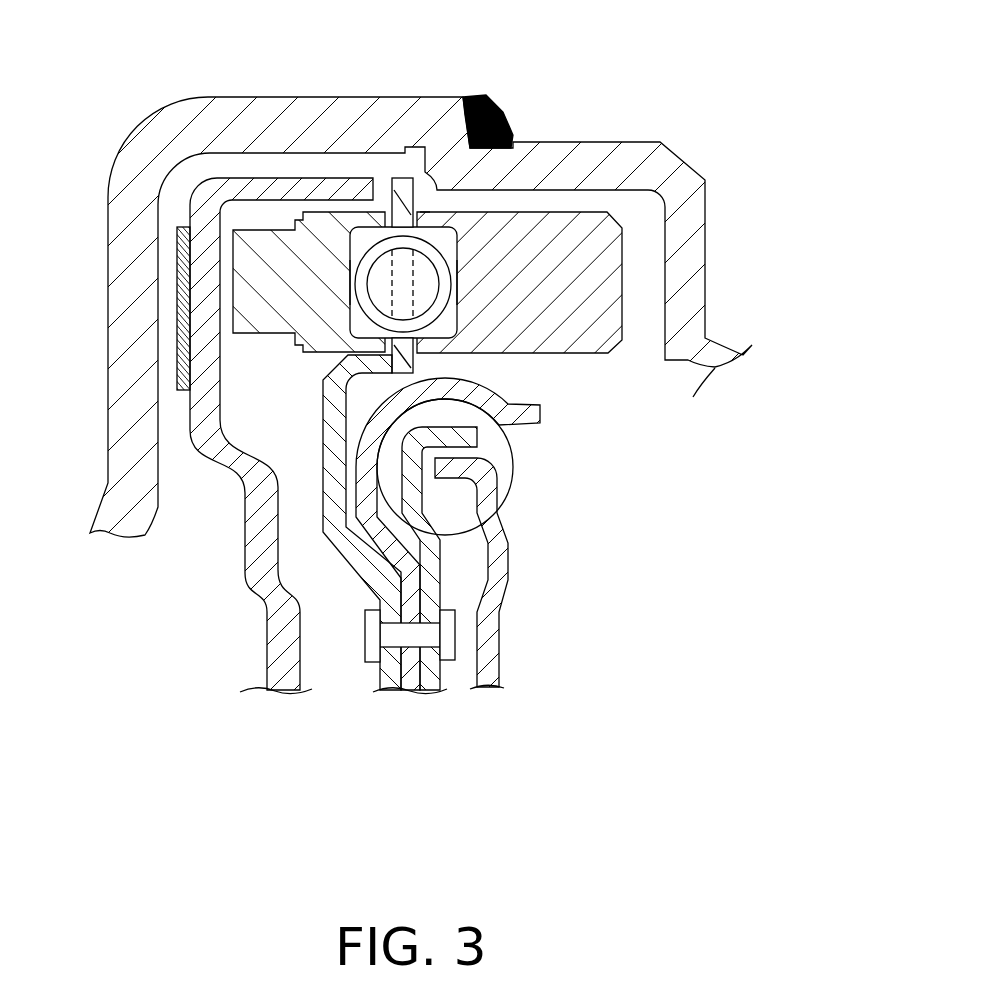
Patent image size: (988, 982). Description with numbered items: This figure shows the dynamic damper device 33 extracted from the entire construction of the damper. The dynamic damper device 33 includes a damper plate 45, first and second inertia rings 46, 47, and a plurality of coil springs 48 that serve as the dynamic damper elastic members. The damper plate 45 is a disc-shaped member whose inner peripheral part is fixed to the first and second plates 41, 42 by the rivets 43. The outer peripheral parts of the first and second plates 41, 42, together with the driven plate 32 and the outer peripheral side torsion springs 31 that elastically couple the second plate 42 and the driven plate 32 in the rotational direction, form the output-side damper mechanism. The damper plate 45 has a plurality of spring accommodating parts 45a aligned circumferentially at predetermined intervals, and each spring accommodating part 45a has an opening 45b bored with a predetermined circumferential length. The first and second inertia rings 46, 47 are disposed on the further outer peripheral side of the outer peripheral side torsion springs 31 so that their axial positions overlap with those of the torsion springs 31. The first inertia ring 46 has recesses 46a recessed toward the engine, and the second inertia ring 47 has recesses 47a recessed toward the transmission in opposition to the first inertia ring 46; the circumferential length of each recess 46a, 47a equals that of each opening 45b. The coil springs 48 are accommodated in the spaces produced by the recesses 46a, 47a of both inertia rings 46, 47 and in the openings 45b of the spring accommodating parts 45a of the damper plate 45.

The outer peripheral side torsion spring 31 is at (513, 462).
The driven plate 32 is at (492, 656).
The dynamic damper device 33 is at (643, 253).
The first plate 41 is at (410, 690).
The second plate 42 is at (440, 675).
The rivet 43 is at (365, 650).
The damper plate 45 is at (337, 532).
The spring accommodating part 45a is at (428, 213).
The opening 45b is at (400, 190).
The first inertia ring 46 is at (268, 240).
The recess 46a is at (363, 268).
The second inertia ring 47 is at (597, 338).
The recess 47a is at (443, 292).
The coil spring 48 is at (427, 250).